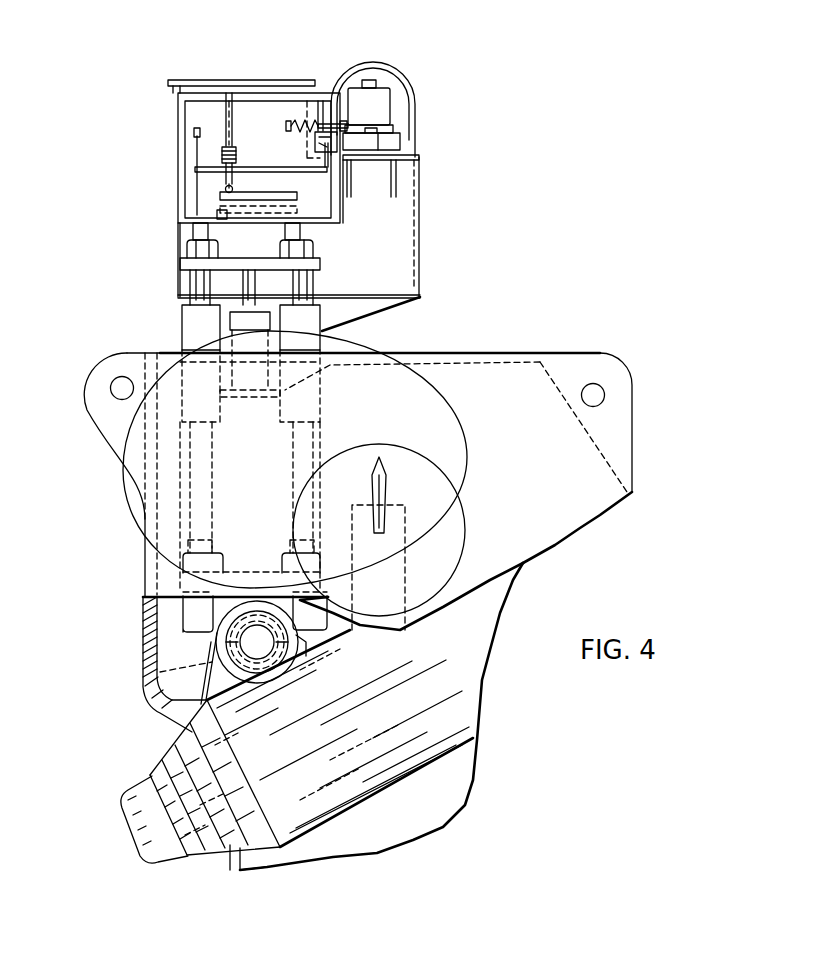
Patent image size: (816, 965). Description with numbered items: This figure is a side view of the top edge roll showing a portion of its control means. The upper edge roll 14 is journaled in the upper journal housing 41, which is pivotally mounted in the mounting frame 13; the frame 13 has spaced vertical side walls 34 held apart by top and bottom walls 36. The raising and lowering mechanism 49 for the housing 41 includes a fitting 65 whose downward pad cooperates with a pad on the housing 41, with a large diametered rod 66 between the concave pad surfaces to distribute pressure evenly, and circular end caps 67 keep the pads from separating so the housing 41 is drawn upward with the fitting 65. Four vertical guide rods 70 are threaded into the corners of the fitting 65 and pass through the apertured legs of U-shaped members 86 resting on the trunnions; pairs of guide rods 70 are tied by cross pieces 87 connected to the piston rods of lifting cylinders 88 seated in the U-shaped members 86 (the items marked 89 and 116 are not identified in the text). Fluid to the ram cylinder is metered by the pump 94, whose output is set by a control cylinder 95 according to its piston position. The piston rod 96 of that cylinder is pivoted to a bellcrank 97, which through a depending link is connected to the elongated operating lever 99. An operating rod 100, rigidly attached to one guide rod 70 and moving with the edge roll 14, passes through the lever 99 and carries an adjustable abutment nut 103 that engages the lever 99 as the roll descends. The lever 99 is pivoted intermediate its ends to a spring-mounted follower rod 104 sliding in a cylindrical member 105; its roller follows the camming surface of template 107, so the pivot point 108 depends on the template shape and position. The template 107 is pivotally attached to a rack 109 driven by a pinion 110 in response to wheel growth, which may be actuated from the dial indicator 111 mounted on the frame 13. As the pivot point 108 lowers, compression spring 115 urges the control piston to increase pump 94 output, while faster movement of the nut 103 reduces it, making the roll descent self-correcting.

The mounting frame 13 is at (528, 387).
The upper edge roll 14 is at (150, 863).
The side walls 34 is at (600, 367).
The top and bottom walls 36 is at (430, 363).
The journal housing 41 is at (474, 682).
The raising and lowering mechanism 49 is at (97, 334).
The fitting 65 is at (188, 607).
The rod 66 is at (143, 678).
The circular end cap 67 is at (223, 628).
The guide rods 70 is at (197, 507).
The U-shaped members 86 is at (365, 353).
The cross pieces 87 is at (188, 264).
The lifting cylinders 88 is at (190, 315).
The nuts 89 is at (187, 250).
The pump 94 is at (380, 102).
The control cylinder 95 is at (397, 124).
The piston rod 96 is at (317, 133).
The bellcrank 97 is at (304, 132).
The operating lever 99 is at (264, 167).
The operating rod 100 is at (195, 146).
The abutment nut 103 is at (195, 136).
The follower rod 104 is at (224, 153).
The cylindrical member 105 is at (228, 110).
The template 107 is at (218, 196).
The pivot point 108 is at (223, 178).
The rack 109 is at (213, 211).
The pinion 110 is at (193, 224).
The dial indicator 111 is at (457, 530).
The compression spring 115 is at (289, 122).
The base member 116 is at (266, 964).